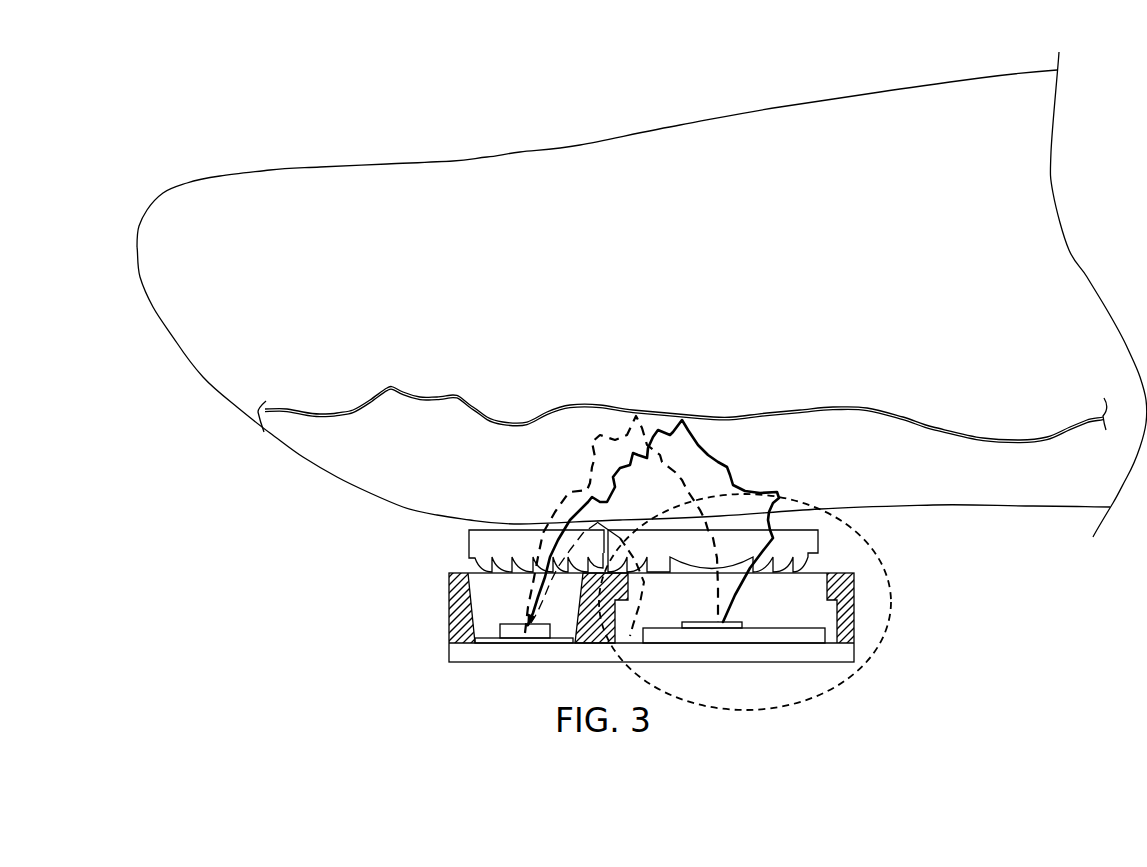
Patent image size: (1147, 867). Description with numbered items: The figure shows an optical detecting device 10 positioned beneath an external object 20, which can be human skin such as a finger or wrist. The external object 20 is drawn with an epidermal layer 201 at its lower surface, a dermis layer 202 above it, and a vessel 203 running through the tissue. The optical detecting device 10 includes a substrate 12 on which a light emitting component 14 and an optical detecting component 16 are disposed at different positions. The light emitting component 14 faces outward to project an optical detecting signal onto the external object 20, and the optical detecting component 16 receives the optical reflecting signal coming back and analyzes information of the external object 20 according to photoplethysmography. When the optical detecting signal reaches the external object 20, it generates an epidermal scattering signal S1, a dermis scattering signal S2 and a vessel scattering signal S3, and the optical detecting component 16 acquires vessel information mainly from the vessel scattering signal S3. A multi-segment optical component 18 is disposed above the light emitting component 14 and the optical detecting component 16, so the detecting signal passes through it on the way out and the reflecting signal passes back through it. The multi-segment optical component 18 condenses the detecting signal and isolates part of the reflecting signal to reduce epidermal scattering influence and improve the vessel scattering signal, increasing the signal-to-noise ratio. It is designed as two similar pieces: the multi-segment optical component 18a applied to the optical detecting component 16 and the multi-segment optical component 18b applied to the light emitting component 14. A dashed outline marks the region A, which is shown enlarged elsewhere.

The external object 20 is at (642, 318).
The epidermal layer 201 is at (405, 509).
The dermis layer 202 is at (588, 283).
The vessel 203 is at (445, 397).
The optical detecting device 10 is at (673, 618).
The substrate 12 is at (473, 652).
The light emitting component 14 is at (526, 633).
The optical detecting component 16 is at (705, 628).
The multi-segment optical component 18 is at (673, 574).
The multi-segment optical component 18a is at (803, 541).
The multi-segment optical component 18b is at (490, 538).
The region A is at (893, 600).
The epidermal scattering signal S1 is at (632, 579).
The dermis scattering signal S2 is at (733, 470).
The vessel scattering signal S3 is at (567, 495).